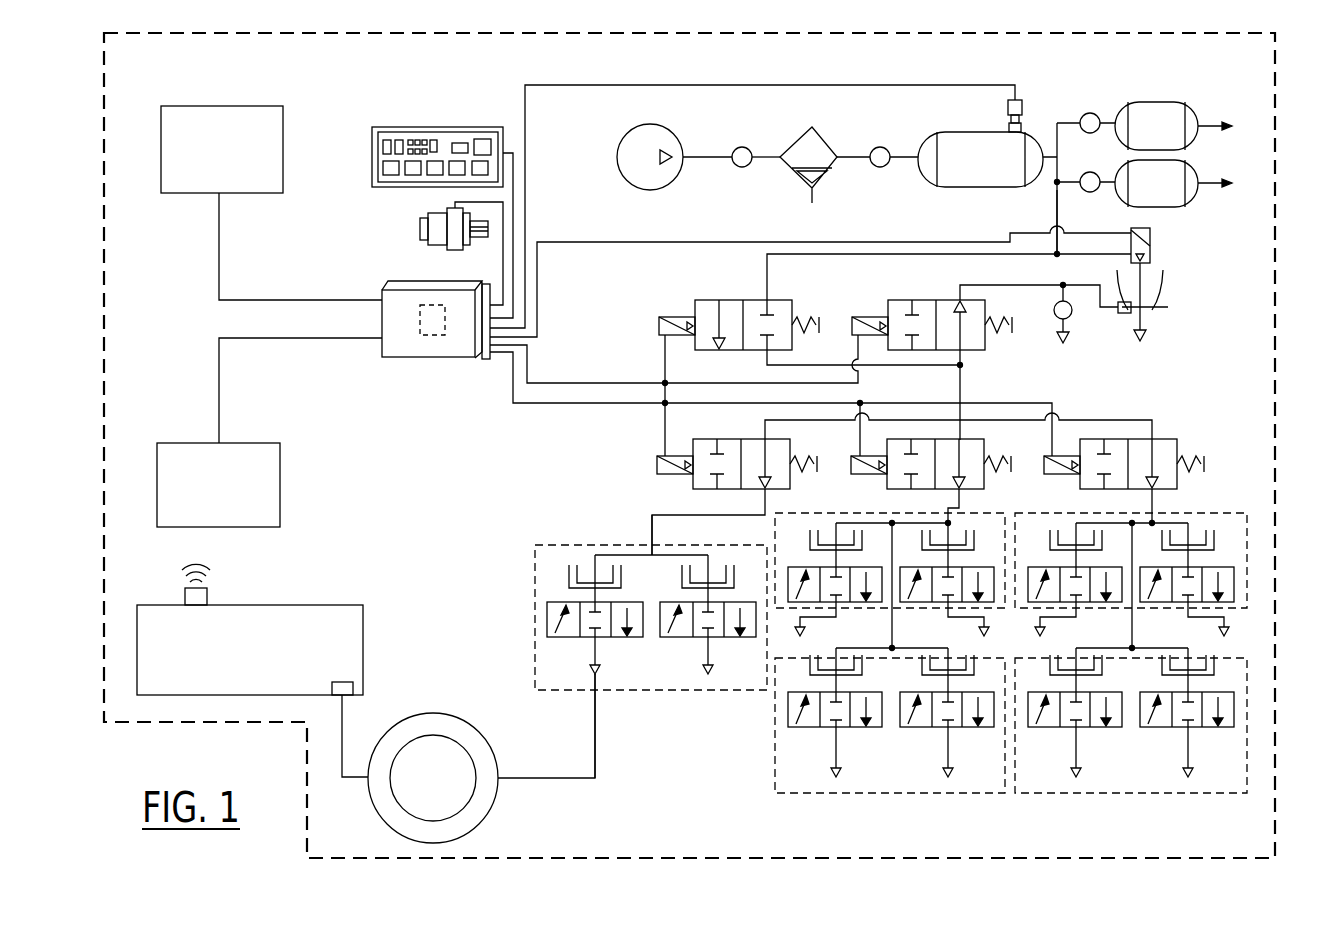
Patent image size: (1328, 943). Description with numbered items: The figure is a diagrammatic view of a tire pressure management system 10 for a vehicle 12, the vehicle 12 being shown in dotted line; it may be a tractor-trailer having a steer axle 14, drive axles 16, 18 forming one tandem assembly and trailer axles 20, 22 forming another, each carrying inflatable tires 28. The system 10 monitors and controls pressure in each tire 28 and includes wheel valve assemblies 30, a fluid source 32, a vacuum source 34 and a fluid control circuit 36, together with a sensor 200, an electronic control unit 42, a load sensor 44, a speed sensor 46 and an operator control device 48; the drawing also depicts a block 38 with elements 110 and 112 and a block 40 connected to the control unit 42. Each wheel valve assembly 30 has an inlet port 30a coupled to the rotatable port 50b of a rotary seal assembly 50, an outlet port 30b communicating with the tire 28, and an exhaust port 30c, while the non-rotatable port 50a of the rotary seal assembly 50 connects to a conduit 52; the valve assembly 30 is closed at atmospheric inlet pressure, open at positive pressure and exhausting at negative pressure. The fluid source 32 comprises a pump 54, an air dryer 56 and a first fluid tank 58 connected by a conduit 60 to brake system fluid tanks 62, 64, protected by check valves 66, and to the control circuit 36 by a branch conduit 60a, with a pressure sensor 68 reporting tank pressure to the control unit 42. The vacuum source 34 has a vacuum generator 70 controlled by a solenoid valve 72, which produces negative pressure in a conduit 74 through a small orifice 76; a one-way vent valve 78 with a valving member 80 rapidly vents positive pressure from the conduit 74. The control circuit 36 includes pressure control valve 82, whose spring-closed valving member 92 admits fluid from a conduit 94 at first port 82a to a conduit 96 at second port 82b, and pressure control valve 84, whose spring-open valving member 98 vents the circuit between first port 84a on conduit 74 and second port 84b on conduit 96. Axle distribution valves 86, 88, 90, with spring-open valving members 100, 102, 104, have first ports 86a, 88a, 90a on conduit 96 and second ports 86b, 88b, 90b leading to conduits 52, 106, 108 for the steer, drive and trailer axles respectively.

The tire pressure management system 10 is at (490, 428).
The vehicle 12 is at (745, 44).
The steer axle 14 is at (620, 626).
The drive axle 16 is at (822, 512).
The drive axle 18 is at (772, 752).
The trailer axle 20 is at (1250, 536).
The trailer axle 22 is at (1250, 686).
The inflatable tire 28 is at (441, 718).
The wheel valve assembly 30 is at (614, 673).
The inlet port 30a is at (690, 601).
The outlet port 30b is at (590, 640).
The exhaust port 30c is at (550, 602).
The fluid source 32 is at (710, 143).
The vacuum source 34 is at (1166, 283).
The fluid control circuit 36 is at (740, 234).
The pressure sensing circuit 38 is at (282, 668).
The receiver 40 is at (281, 478).
The electronic control unit 42 is at (406, 338).
The load sensor 44 is at (262, 100).
The speed sensor 46 is at (420, 232).
The operator control device 48 is at (425, 120).
The rotary seal assembly 50 is at (620, 538).
The non-rotatable port 50a is at (592, 552).
The rotatable port 50b is at (752, 545).
The conduit 52 is at (655, 520).
The pump 54 is at (634, 142).
The air dryer 56 is at (823, 141).
The first fluid tank 58 is at (958, 185).
The conduit 60 is at (1032, 166).
The branch conduit 60a is at (1057, 208).
The brake system fluid tank 62 is at (1176, 104).
The brake system fluid tank 64 is at (1186, 176).
The check valve 66 is at (1095, 168).
The pressure sensor 68 is at (1008, 108).
The vacuum generator 70 is at (1160, 290).
The solenoid valve 72 is at (1152, 243).
The conduit 74 is at (1065, 292).
The orifice 76 is at (1158, 312).
The one-way vent valve 78 is at (1095, 318).
The valving member 80 is at (1073, 325).
The pressure control valve 82 is at (734, 312).
The first port 82a is at (765, 300).
The second port 82b is at (763, 350).
The pressure control valve 84 is at (944, 347).
The first port 84a is at (958, 300).
The second port 84b is at (970, 352).
The axle distribution valve 86 is at (878, 479).
The first port 86a is at (760, 442).
The second port 86b is at (763, 490).
The axle distribution valve 88 is at (949, 447).
The first port 88a is at (957, 437).
The second port 88b is at (955, 493).
The axle distribution valve 90 is at (1157, 448).
The first port 90a is at (1155, 437).
The second port 90b is at (1160, 495).
The valving member 92 is at (785, 303).
The conduit 94 is at (780, 254).
The conduit 96 is at (966, 393).
The valving member 98 is at (988, 345).
The valving member 100 is at (793, 449).
The valving member 102 is at (985, 451).
The valving member 104 is at (1180, 440).
The conduit 106 is at (963, 500).
The conduit 108 is at (1160, 505).
The pressure sensor connection 110 is at (354, 686).
The transmitter 112 is at (210, 597).
The sensor 200 is at (420, 322).